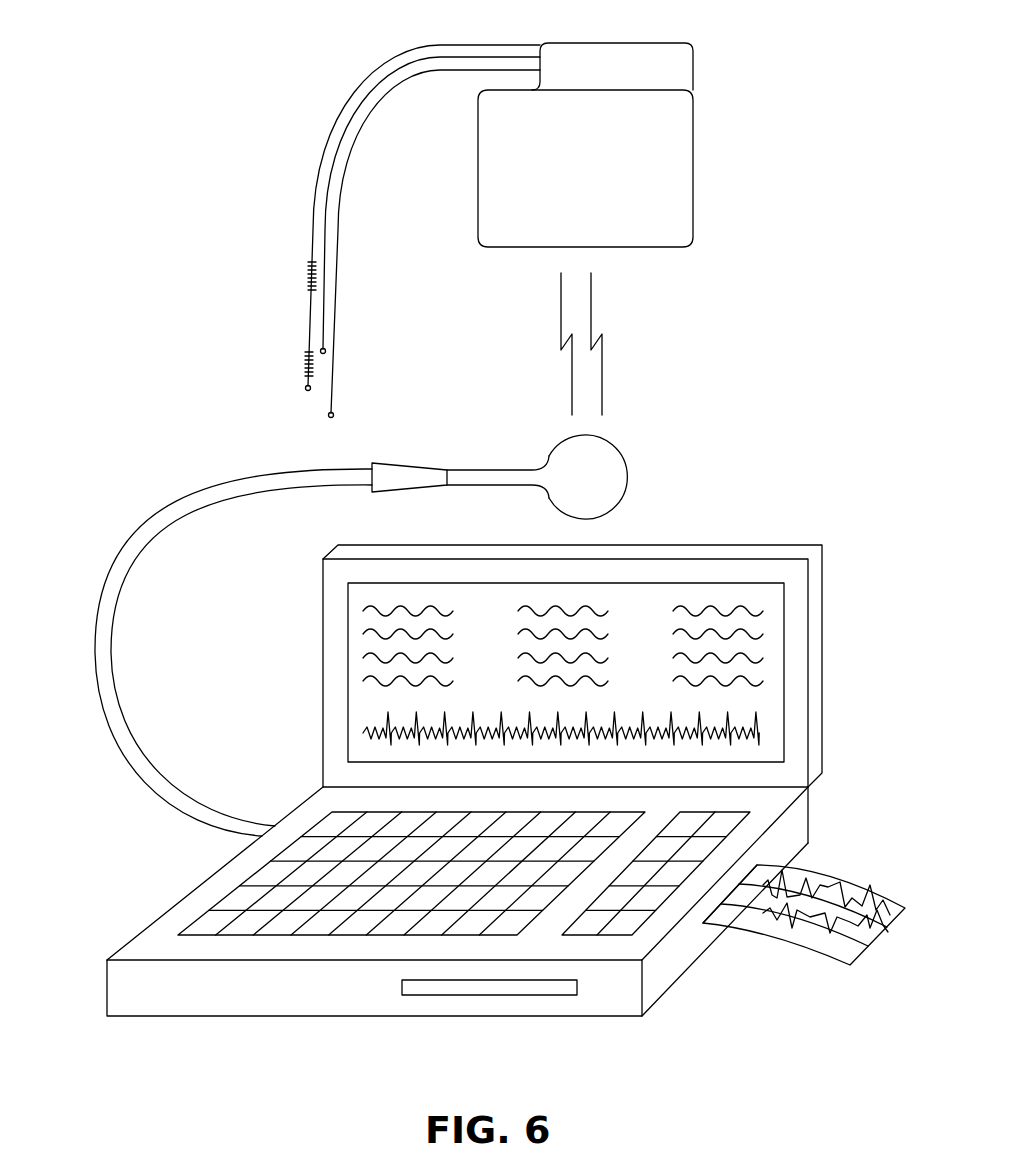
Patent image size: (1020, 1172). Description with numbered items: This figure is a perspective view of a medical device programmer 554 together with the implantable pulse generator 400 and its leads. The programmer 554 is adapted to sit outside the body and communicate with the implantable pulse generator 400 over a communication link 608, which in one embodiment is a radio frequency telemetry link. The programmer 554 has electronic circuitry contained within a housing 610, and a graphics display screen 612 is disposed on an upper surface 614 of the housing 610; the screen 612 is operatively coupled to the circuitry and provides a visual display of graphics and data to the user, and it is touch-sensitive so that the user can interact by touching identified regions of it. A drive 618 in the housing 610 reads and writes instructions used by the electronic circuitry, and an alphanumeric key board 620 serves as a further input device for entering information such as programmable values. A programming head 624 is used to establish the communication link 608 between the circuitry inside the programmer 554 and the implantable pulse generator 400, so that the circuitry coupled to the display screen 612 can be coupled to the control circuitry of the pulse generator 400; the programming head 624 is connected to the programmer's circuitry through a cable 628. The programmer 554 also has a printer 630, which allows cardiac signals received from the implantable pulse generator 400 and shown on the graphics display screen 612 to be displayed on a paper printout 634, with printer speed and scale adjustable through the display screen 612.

The implantable pulse generator 400 is at (693, 143).
The communication link 608 is at (602, 373).
The programming head 624 is at (627, 477).
The cable 628 is at (165, 506).
The medical device programmer 554 is at (737, 503).
The housing 610 is at (667, 970).
The graphics display screen 612 is at (770, 693).
The upper surface 614 is at (140, 947).
The alphanumeric key board 620 is at (610, 897).
The drive 618 is at (458, 988).
The printer 630 is at (755, 866).
The paper printout 634 is at (813, 940).